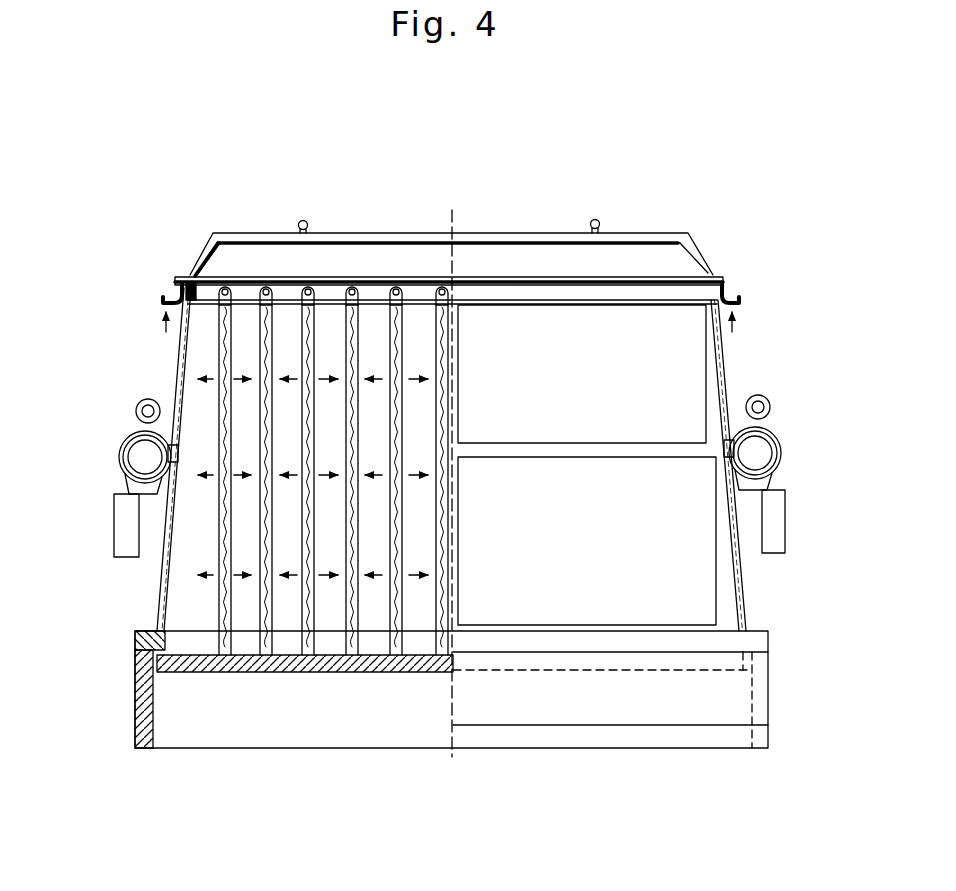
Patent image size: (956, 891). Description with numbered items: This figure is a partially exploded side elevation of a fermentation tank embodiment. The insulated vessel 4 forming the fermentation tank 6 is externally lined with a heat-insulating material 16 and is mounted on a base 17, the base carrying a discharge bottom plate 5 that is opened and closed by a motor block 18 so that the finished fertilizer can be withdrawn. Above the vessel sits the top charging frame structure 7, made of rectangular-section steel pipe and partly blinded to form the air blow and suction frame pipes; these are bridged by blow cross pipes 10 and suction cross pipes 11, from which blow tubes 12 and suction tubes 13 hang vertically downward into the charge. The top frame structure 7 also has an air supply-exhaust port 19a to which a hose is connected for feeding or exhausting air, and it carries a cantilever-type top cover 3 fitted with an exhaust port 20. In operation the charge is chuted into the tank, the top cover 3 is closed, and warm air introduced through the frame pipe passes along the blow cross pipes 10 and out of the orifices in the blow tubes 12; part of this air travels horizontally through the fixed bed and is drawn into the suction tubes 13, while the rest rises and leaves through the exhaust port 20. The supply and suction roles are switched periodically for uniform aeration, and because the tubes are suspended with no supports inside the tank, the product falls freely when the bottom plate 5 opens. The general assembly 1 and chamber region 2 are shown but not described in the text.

The spray apparatus 1 is at (212, 496).
The spray chamber 2 is at (252, 514).
The top cover 3 is at (520, 233).
The insulated vessel 4 is at (723, 597).
The discharge bottom plate 5 is at (417, 667).
The fermentation tank 6 is at (732, 361).
The top charging frame structure 7 is at (427, 270).
The blow cross pipes 10 is at (226, 282).
The suction cross pipes 11 is at (267, 282).
The blow tubes 12 is at (228, 618).
The suction tubes 13 is at (268, 612).
The heat-insulating material 16 is at (726, 378).
The base 17 is at (760, 678).
The motor block 18 is at (765, 447).
The air supply-exhaust port 19a is at (167, 290).
The exhaust port 20 is at (306, 221).